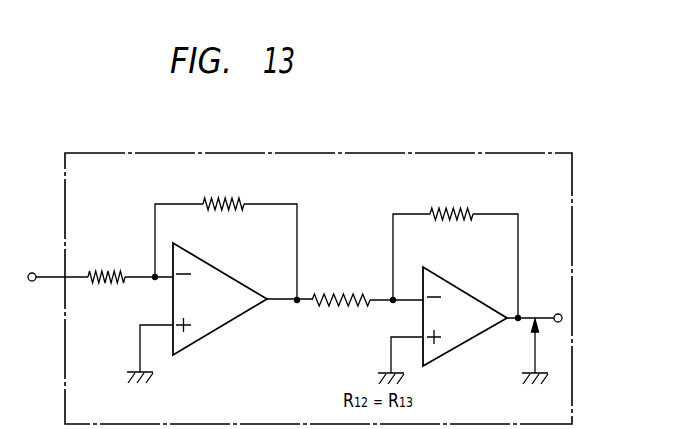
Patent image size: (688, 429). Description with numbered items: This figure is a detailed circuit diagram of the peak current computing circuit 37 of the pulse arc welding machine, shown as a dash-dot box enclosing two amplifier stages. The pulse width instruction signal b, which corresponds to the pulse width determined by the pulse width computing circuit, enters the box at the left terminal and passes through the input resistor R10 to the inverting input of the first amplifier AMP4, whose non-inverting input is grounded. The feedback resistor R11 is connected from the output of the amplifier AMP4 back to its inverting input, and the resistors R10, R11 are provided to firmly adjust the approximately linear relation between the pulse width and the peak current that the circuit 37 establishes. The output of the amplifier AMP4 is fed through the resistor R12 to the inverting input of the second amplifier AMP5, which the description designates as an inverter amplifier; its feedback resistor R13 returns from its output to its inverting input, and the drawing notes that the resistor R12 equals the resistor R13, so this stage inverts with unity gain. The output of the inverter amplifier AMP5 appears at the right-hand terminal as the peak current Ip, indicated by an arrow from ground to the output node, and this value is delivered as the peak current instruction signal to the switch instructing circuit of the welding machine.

The peak current computing circuit 37 is at (333, 153).
The pulse width instruction signal b is at (57, 262).
The resistor R10 is at (106, 263).
The resistor R11 is at (226, 233).
The resistor R12 is at (341, 285).
The resistor R13 is at (455, 249).
The amplifier AMP4 is at (220, 299).
The inverter amplifier AMP5 is at (465, 316).
The peak current Ip is at (540, 351).